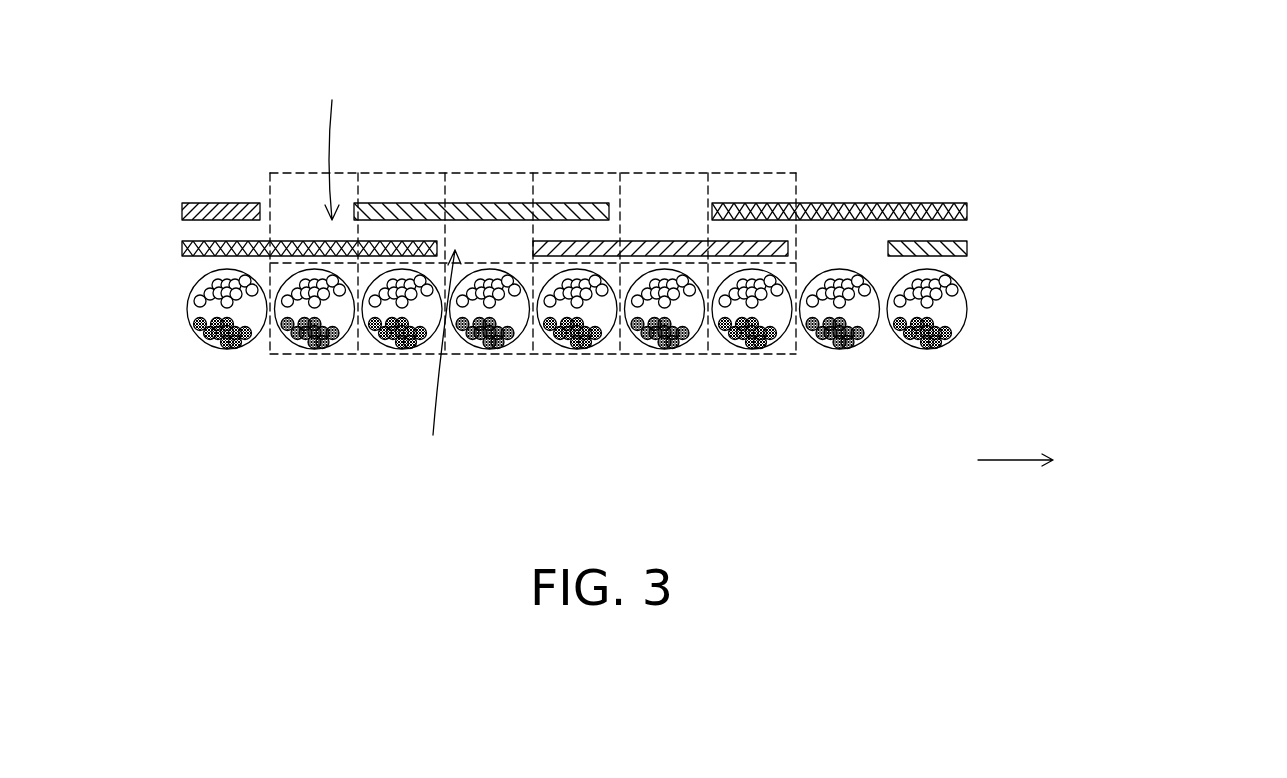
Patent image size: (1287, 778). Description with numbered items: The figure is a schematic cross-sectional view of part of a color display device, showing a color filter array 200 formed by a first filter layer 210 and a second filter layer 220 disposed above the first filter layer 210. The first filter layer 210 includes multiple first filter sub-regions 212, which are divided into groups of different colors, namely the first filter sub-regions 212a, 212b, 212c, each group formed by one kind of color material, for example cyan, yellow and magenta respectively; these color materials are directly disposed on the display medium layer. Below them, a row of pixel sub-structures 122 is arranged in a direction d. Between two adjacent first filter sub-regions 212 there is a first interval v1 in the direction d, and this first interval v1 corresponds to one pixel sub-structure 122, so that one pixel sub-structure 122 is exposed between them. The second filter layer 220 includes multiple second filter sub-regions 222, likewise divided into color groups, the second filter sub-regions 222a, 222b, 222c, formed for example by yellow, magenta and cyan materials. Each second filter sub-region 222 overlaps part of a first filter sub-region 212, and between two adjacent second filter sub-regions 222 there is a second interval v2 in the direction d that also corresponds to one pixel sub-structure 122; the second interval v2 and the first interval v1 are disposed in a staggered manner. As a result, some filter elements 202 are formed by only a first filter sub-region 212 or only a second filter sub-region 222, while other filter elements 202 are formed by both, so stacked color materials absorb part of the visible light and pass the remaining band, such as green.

The color filter array 200 is at (1103, 190).
The second filter layer 220 is at (967, 212).
The second filter sub-regions 222 is at (574, 139).
The second filter sub-regions 222a is at (220, 203).
The second filter sub-regions 222b is at (435, 203).
The second filter sub-regions 222c is at (910, 203).
The first filter layer 210 is at (967, 249).
The first filter sub-regions 212 is at (669, 359).
The first filter sub-regions 212a is at (190, 256).
The first filter sub-regions 212b is at (603, 256).
The first filter sub-regions 212c is at (955, 256).
The filter element 202 is at (788, 173).
The pixel sub-structures 122 is at (765, 352).
The first interval v1 is at (439, 358).
The second interval v2 is at (330, 144).
The direction d is at (1026, 459).